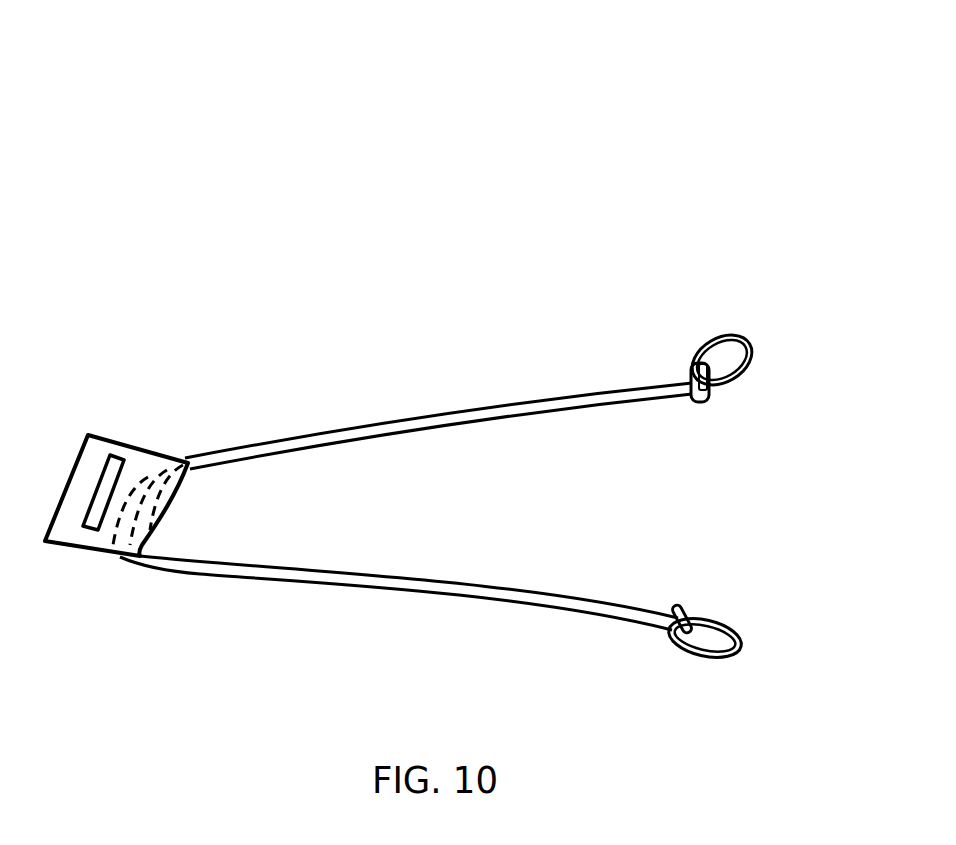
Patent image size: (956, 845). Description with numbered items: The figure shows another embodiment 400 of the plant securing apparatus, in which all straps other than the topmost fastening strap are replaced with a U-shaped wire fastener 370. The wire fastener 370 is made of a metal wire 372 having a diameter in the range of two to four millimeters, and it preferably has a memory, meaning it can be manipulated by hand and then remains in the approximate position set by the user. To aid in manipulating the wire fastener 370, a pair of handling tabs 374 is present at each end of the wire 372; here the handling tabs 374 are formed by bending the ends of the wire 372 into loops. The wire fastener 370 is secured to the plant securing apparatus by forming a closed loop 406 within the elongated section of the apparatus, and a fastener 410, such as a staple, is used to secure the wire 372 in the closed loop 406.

The embodiment 400 is at (628, 88).
The U-shaped wire fastener 370 is at (430, 240).
The metal wire 372 is at (358, 417).
The handling tabs 374 is at (730, 327).
The closed loop 406 is at (137, 465).
The fastener 410 is at (106, 483).